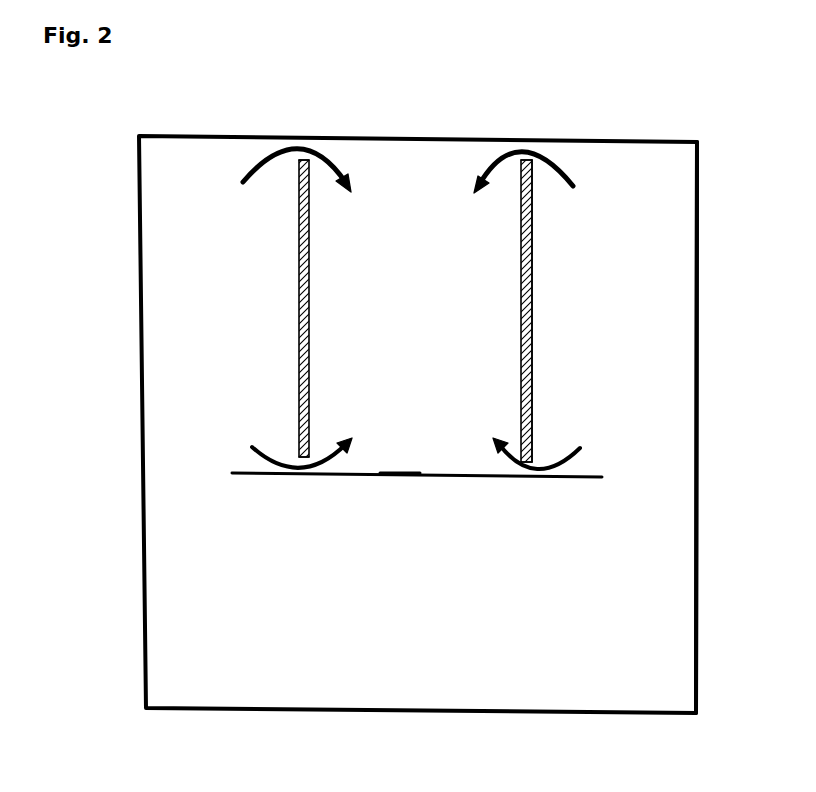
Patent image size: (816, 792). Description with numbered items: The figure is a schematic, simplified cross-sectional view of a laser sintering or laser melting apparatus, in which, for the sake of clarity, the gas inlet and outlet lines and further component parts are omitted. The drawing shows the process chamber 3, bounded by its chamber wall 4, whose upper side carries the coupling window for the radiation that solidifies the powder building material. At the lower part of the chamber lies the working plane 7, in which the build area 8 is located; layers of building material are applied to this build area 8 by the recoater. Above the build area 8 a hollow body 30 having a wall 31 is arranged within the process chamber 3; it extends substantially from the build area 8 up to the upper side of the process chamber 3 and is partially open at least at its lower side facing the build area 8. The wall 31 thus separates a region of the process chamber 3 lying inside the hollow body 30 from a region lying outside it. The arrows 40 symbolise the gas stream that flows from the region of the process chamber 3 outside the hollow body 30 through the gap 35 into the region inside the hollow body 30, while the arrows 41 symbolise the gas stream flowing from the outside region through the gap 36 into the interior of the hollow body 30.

The process chamber 3 is at (670, 558).
The chamber wall 4 is at (697, 452).
The working plane 7 is at (566, 478).
The build area 8 is at (398, 473).
The hollow body 30 is at (540, 300).
The wall 31 is at (527, 258).
The gap 35 is at (316, 448).
The gap 36 is at (293, 168).
The arrows 40 is at (270, 451).
The arrows 41 is at (250, 174).